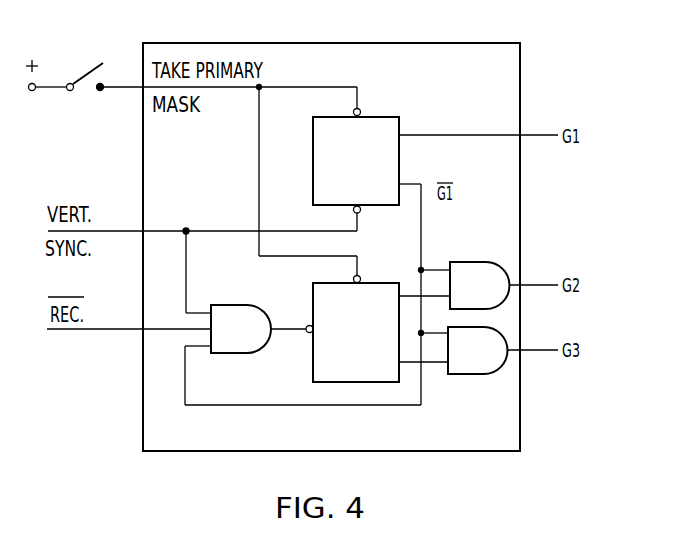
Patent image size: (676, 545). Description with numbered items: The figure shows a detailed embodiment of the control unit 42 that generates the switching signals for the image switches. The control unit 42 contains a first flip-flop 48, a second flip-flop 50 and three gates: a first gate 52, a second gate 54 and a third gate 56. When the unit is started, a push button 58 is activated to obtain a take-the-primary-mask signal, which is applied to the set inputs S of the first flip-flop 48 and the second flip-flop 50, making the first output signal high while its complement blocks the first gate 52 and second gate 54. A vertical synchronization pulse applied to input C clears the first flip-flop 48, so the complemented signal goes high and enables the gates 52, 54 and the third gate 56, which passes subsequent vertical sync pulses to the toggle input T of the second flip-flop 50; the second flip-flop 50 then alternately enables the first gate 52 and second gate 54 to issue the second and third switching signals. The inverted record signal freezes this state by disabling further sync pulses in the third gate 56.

The control unit 42 is at (514, 72).
The first flip-flop 48 is at (390, 117).
The second flip-flop 50 is at (388, 284).
The first gate 52 is at (473, 265).
The second gate 54 is at (472, 374).
The third gate 56 is at (240, 349).
The push button 58 is at (79, 89).